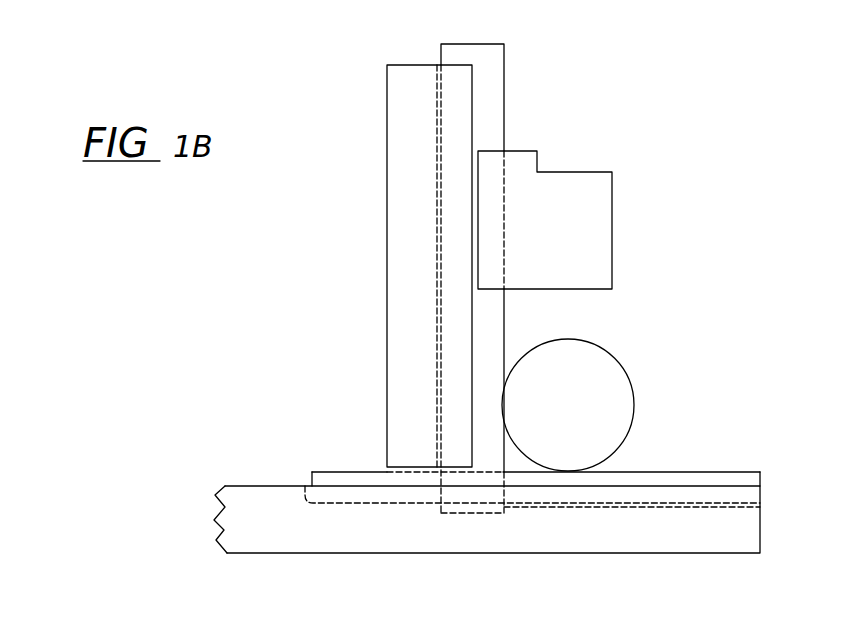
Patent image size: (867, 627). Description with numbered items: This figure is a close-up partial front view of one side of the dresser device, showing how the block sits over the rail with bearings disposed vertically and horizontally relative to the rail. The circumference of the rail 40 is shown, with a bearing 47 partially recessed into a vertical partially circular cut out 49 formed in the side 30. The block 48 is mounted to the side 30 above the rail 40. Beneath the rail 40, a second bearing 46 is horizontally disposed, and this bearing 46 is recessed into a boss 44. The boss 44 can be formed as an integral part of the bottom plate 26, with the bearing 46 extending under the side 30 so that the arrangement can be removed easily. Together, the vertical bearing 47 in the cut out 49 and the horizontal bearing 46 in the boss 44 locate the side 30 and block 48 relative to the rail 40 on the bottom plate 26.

The bottom plate 26 is at (300, 535).
The side 30 is at (403, 230).
The rail 40 is at (567, 363).
The boss 44 is at (690, 512).
The bearing 46 is at (682, 480).
The bearing 47 is at (475, 44).
The block 48 is at (560, 172).
The cut out 49 is at (438, 113).